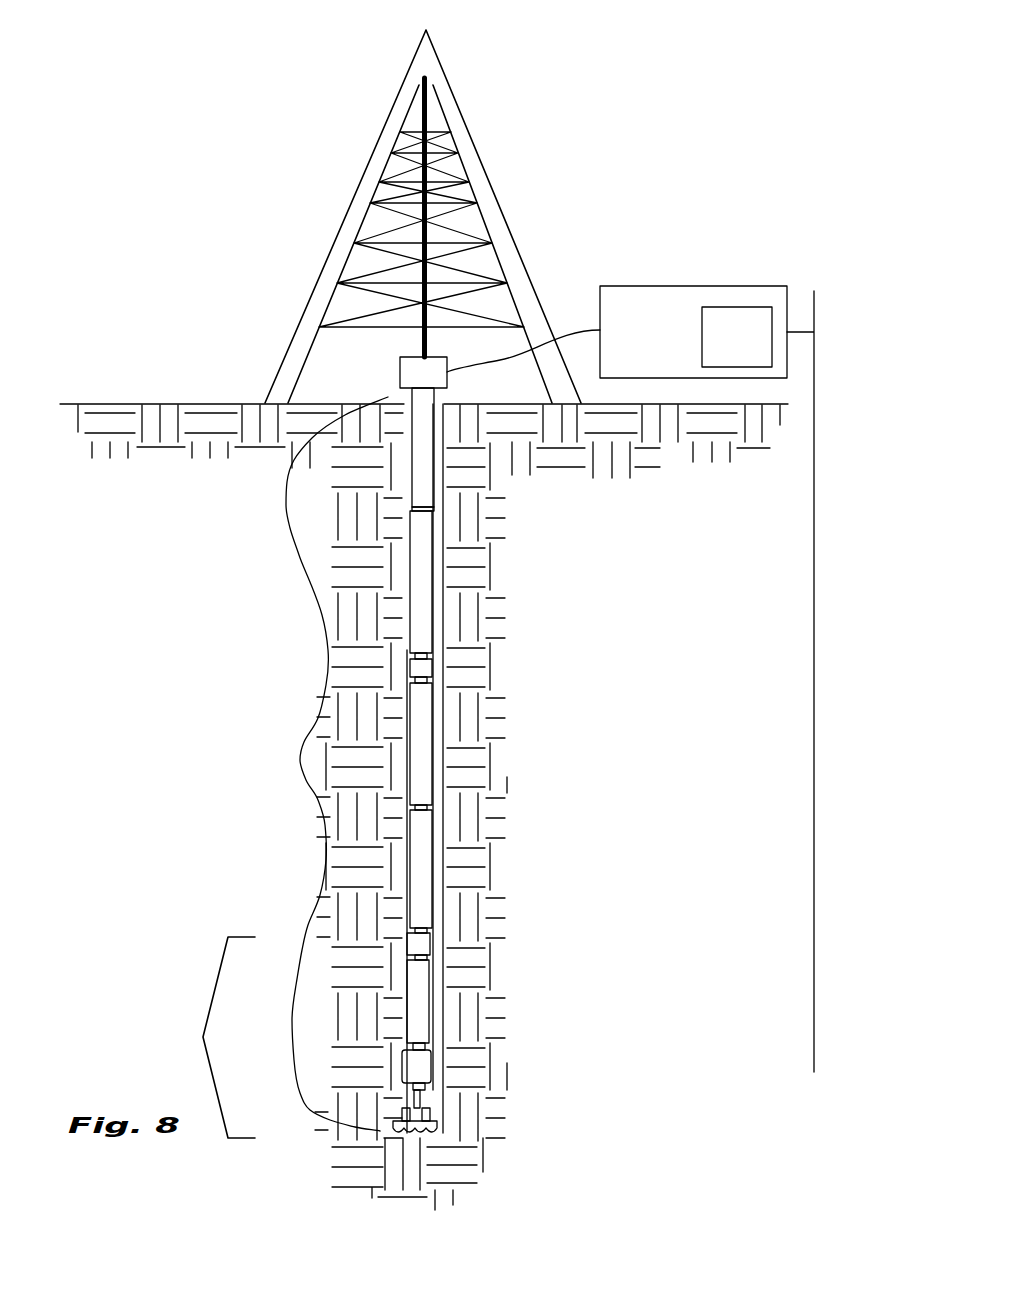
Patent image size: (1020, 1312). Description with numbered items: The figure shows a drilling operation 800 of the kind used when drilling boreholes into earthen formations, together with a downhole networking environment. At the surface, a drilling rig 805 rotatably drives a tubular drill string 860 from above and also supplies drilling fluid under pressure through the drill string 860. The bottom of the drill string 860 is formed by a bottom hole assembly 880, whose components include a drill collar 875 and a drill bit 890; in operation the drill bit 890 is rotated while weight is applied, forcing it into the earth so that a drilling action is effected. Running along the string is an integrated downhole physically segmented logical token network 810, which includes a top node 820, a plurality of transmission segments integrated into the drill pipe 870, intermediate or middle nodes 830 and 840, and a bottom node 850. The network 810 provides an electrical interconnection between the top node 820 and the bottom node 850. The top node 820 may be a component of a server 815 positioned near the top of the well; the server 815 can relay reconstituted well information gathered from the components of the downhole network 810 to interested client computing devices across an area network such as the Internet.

The drilling operation 800 is at (258, 216).
The drilling rig 805 is at (515, 252).
The integrated downhole physically segmented logical token network 810 is at (814, 291).
The server 815 is at (669, 351).
The top node 820 is at (758, 351).
The middle node 830 is at (814, 672).
The middle node 840 is at (814, 948).
The bottom node 850 is at (814, 1072).
The tubular drill string 860 is at (304, 743).
The drill pipe 870 is at (433, 468).
The drill collar 875 is at (415, 1004).
The bottom hole assembly 880 is at (203, 1037).
The drill bit 890 is at (438, 1112).